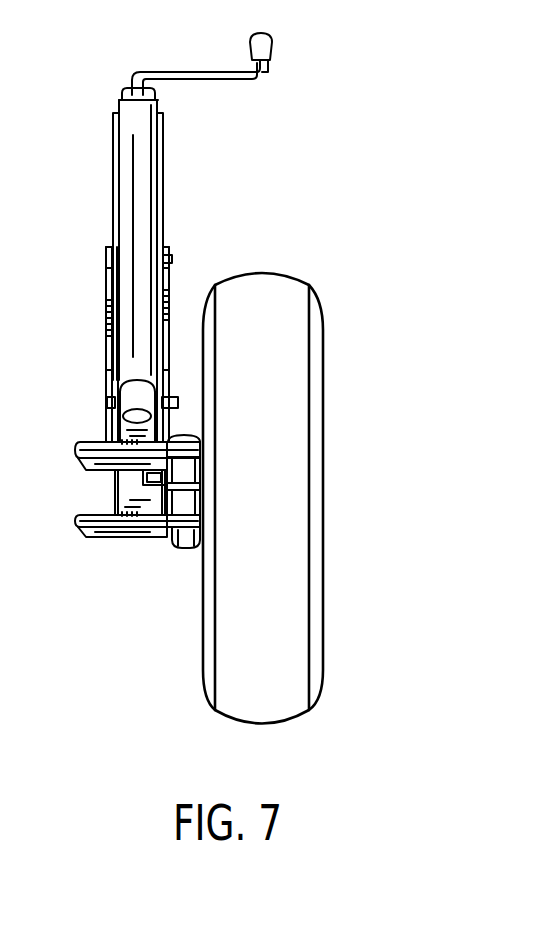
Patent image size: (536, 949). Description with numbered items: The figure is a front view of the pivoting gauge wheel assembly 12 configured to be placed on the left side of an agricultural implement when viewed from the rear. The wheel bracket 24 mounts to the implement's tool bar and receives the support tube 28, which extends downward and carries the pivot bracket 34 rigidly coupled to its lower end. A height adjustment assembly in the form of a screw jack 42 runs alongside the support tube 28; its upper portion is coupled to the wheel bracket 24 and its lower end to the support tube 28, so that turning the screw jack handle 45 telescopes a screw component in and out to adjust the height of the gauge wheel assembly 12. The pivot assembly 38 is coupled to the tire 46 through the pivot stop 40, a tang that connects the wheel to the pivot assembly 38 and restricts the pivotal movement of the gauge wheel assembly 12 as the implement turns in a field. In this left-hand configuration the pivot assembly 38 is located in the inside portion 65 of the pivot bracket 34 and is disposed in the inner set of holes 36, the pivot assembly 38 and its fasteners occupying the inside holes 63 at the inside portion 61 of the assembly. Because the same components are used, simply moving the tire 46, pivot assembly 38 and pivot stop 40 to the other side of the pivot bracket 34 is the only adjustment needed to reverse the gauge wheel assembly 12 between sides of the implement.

The gauge wheel assembly 12 is at (351, 614).
The wheel bracket 24 is at (106, 302).
The support tube 28 is at (125, 487).
The pivot bracket 34 is at (80, 527).
The holes 36 is at (182, 440).
The pivot assembly 38 is at (182, 507).
The pivot stop 40 is at (155, 478).
The screw jack 42 is at (145, 168).
The screw jack handle 45 is at (217, 71).
The tire 46 is at (305, 403).
The inside portion 61 is at (86, 545).
The inside holes 63 is at (90, 447).
The inside portion 65 is at (190, 562).